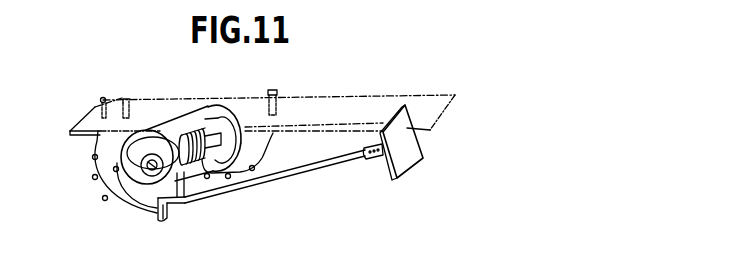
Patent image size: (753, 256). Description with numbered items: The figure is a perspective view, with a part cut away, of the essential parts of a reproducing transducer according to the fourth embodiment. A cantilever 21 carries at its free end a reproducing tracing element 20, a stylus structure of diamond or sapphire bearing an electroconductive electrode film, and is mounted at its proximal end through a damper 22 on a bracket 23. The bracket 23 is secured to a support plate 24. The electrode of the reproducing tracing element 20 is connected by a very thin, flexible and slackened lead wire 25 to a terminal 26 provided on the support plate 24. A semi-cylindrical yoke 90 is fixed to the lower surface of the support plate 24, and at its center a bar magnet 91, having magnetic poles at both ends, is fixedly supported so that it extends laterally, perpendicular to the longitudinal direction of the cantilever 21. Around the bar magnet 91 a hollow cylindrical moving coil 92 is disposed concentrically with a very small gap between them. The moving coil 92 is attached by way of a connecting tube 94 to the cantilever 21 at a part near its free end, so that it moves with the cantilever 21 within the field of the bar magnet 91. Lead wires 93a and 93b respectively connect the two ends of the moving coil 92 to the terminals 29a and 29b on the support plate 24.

The reproducing tracing element 20 is at (157, 221).
The cantilever 21 is at (304, 174).
The damper 22 is at (378, 158).
The bracket 23 is at (418, 148).
The support plate 24 is at (370, 98).
The lead wire 25 is at (96, 165).
The terminal 26 is at (101, 98).
The terminal 29a is at (278, 96).
The terminal 29b is at (128, 98).
The semi-cylindrical yoke 90 is at (194, 112).
The bar magnet 91 is at (157, 180).
The moving coil 92 is at (196, 186).
The lead wire 93a is at (275, 151).
The lead wire 93b is at (102, 182).
The connecting tube 94 is at (186, 205).